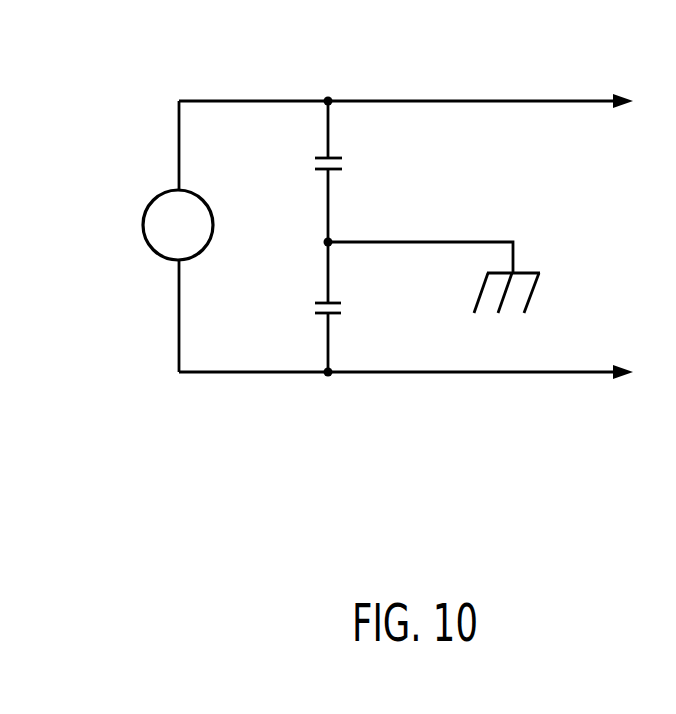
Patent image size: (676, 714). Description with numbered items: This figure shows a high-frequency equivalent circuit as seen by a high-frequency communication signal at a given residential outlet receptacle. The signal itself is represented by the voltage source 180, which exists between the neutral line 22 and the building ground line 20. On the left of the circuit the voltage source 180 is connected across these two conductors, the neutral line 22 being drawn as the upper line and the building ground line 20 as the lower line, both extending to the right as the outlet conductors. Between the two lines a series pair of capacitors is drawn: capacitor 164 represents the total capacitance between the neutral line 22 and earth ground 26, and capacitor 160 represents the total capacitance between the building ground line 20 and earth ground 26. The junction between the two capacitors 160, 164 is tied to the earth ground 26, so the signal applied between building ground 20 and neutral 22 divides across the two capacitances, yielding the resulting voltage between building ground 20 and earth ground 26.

The building ground line 20 is at (545, 395).
The neutral line 22 is at (536, 86).
The earth ground 26 is at (560, 287).
The capacitor 160 is at (350, 312).
The capacitor 164 is at (357, 157).
The voltage source 180 is at (138, 191).